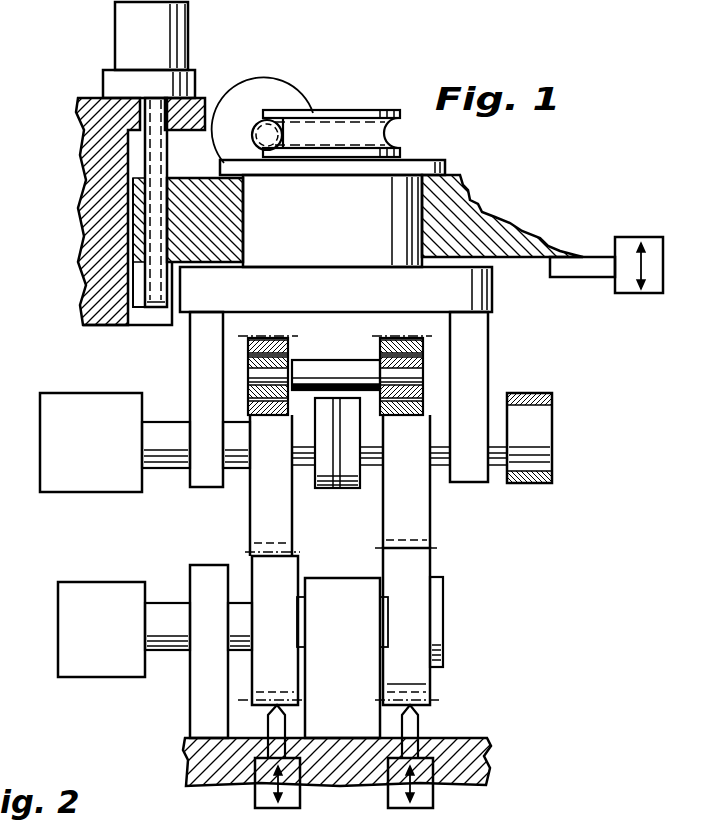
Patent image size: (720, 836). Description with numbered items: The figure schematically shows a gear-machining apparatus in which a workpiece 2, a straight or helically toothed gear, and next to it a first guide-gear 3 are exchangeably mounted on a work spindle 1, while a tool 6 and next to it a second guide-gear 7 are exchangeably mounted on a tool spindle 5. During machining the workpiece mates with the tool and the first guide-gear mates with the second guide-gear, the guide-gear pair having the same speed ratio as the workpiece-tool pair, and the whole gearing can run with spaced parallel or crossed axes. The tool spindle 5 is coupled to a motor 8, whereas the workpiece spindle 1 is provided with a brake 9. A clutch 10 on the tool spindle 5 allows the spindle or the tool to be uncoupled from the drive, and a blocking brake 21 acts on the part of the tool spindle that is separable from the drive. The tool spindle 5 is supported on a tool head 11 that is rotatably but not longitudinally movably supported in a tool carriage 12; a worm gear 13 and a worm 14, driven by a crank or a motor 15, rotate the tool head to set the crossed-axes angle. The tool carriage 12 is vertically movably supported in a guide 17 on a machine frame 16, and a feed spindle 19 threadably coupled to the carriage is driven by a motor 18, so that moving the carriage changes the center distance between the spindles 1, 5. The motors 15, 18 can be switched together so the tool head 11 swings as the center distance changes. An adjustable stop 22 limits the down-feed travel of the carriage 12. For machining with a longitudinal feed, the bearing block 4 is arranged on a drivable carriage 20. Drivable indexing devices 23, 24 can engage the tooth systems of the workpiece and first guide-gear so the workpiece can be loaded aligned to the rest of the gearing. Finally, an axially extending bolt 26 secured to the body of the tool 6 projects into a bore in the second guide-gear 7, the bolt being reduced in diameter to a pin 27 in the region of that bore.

The work spindle 1 is at (437, 598).
The workpiece 2 is at (433, 683).
The first guide-gear 3 is at (262, 572).
The bearing block 4 is at (340, 626).
The tool spindle 5 is at (438, 457).
The tool 6 is at (416, 516).
The second guide-gear 7 is at (262, 508).
The motor 8 is at (50, 474).
The brake 9 is at (62, 598).
The clutch 10 is at (326, 485).
The tool head 11 is at (492, 332).
The tool carriage 12 is at (450, 182).
The worm gear 13 is at (358, 134).
The worm 14 is at (277, 122).
The motor 15 is at (268, 82).
The machine frame 16 is at (80, 168).
The guide 17 is at (140, 318).
The motor 18 is at (127, 30).
The feed spindle 19 is at (157, 287).
The drivable carriage 20 is at (205, 775).
The blocking brake 21 is at (527, 393).
The adjustable stop 22 is at (628, 292).
The indexing device 23 is at (423, 797).
The indexing device 24 is at (290, 797).
The bolt 26 is at (335, 368).
The pin 27 is at (250, 372).